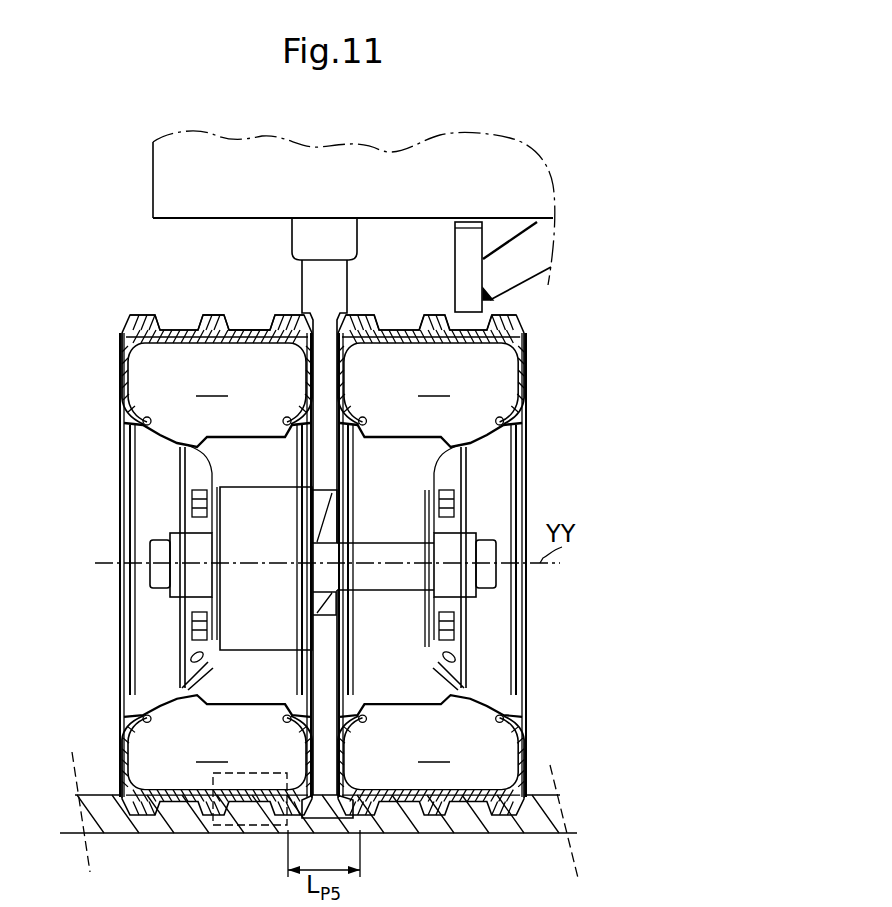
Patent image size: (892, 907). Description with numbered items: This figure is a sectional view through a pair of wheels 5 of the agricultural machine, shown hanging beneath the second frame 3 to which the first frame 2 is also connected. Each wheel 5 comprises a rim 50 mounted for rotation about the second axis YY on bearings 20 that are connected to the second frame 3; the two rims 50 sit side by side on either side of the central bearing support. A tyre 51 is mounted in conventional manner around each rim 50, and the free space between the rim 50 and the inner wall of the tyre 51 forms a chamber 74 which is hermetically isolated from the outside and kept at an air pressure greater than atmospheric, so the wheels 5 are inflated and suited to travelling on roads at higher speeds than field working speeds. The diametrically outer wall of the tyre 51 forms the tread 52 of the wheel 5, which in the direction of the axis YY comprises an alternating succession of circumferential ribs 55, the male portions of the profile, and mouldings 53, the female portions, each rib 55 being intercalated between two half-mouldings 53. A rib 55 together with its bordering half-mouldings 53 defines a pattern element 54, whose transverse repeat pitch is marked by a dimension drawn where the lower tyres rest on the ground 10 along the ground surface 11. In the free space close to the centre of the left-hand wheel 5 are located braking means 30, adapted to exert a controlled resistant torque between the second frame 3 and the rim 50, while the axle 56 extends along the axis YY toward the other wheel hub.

The first frame 2 is at (523, 253).
The second frame 3 is at (222, 218).
The wheel 5 is at (548, 343).
The ground 10 is at (143, 823).
The ground surface 11 is at (100, 793).
The bearings 20 is at (323, 378).
The braking means 30 is at (240, 627).
The rim 50 is at (493, 482).
The tyre 51 is at (517, 410).
The tread 52 is at (398, 290).
The moulding 53 is at (250, 328).
The pattern element 54 is at (250, 827).
The circumferential rib 55 is at (215, 315).
The axle 56 is at (378, 553).
The chamber 74 is at (323, 565).